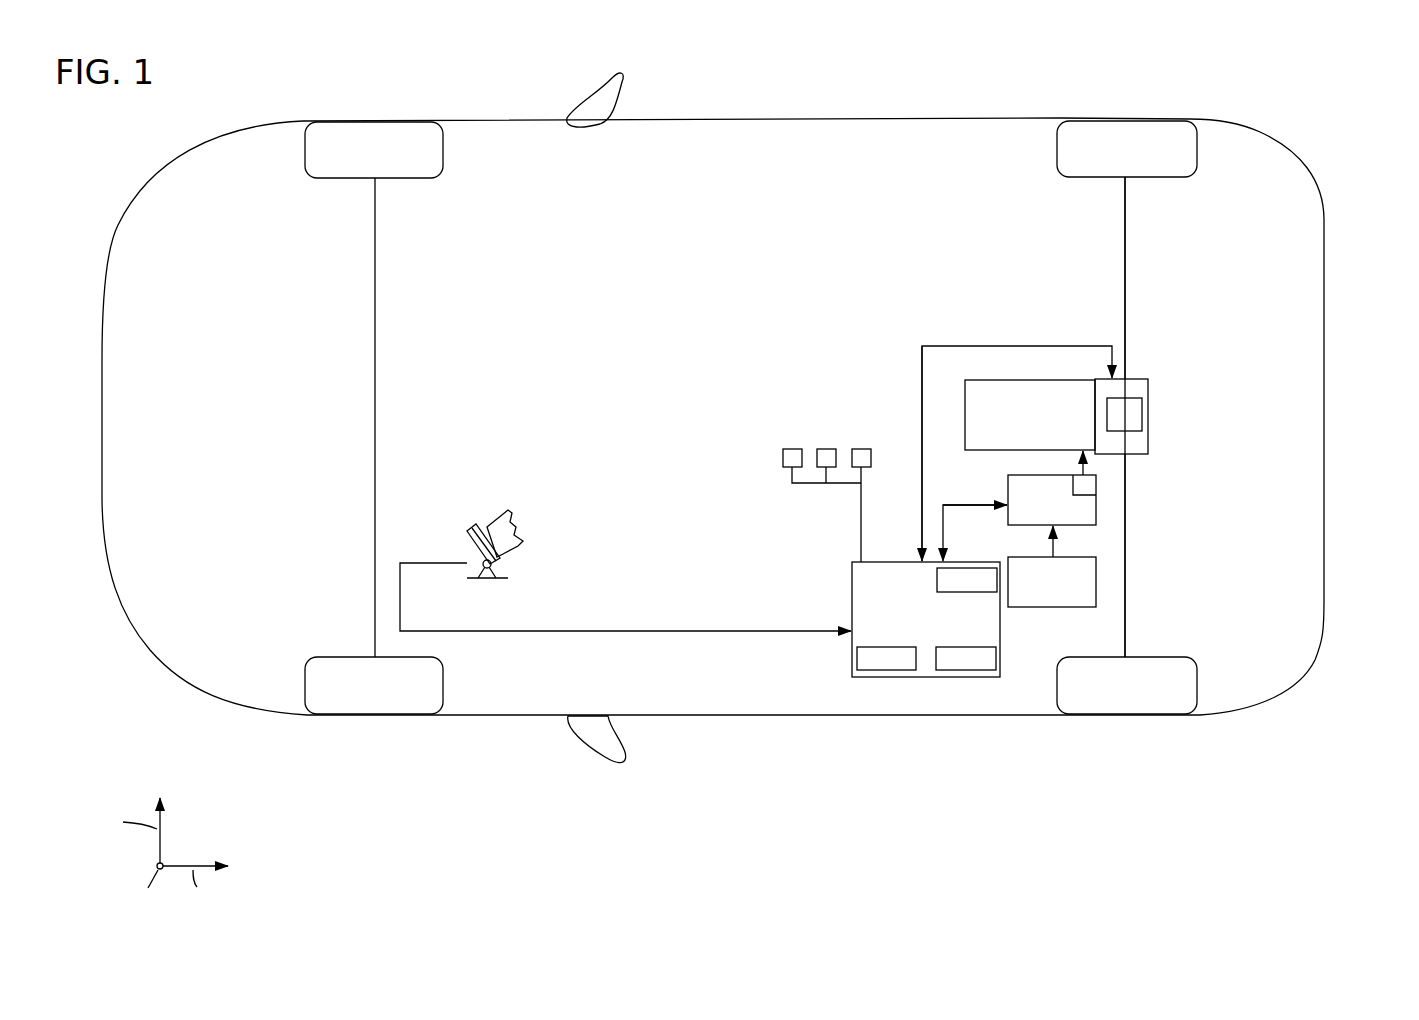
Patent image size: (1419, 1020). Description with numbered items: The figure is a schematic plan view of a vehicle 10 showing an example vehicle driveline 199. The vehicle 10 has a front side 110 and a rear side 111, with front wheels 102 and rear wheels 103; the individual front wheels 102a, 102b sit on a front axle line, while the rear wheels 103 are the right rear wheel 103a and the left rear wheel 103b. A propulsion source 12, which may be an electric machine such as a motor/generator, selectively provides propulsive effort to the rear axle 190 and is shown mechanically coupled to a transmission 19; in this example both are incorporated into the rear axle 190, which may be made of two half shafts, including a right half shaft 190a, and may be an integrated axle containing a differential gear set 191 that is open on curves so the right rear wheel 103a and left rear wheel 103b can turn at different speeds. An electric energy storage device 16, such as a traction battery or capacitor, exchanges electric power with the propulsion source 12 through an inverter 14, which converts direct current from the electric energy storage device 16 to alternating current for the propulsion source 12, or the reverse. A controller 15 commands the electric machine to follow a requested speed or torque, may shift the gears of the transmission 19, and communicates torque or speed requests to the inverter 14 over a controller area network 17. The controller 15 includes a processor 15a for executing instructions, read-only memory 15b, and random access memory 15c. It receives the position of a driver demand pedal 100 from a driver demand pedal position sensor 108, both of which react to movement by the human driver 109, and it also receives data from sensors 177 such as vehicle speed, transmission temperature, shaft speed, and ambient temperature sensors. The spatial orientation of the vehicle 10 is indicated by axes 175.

The vehicle 10 is at (945, 118).
The propulsion source 12 is at (1030, 415).
The inverter 14 is at (1052, 488).
The controller 15 is at (926, 619).
The processor 15a is at (886, 658).
The read-only memory 15b is at (966, 658).
The random access memory 15c is at (967, 580).
The electric energy storage device 16 is at (1052, 566).
The controller area network 17 is at (975, 503).
The transmission 19 is at (1135, 378).
The driver demand pedal 100 is at (468, 540).
The front wheels 102 is at (296, 178).
The front left wheel 102a is at (403, 182).
The front right wheel 102b is at (335, 716).
The rear wheels 103 is at (1201, 189).
The right rear wheel 103a is at (1127, 121).
The left rear wheel 103b is at (1127, 717).
The driver demand pedal position sensor 108 is at (500, 562).
The human driver 109 is at (522, 523).
The front side 110 is at (71, 212).
The rear side 111 is at (1369, 155).
The axes 175 is at (186, 815).
The sensors 177 is at (823, 430).
The rear axle 190 is at (1138, 472).
The right half shaft 190a is at (1127, 310).
The differential gear set 191 is at (1130, 410).
The vehicle driveline 199 is at (1023, 333).